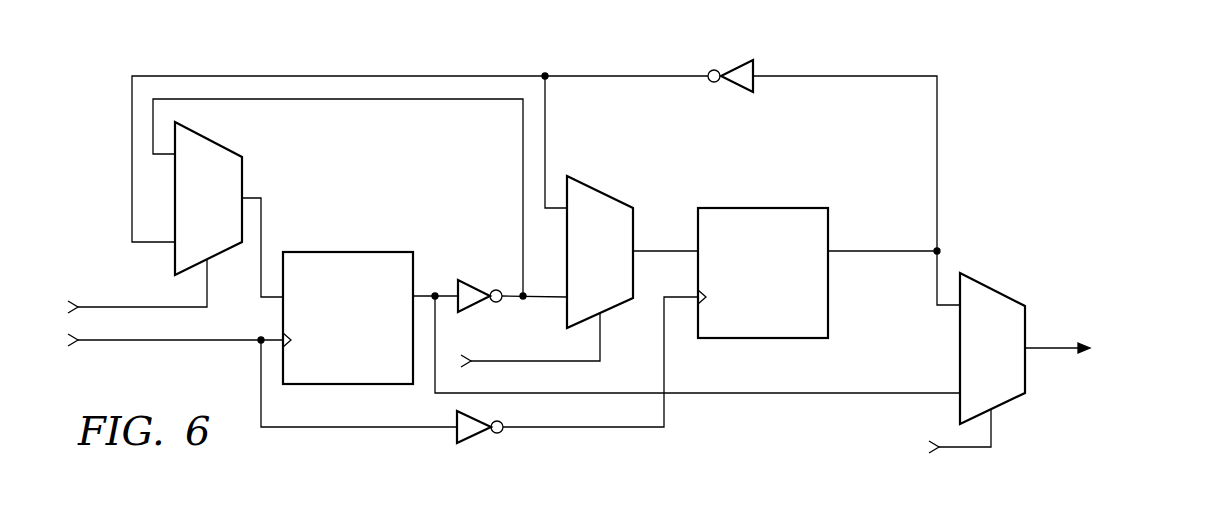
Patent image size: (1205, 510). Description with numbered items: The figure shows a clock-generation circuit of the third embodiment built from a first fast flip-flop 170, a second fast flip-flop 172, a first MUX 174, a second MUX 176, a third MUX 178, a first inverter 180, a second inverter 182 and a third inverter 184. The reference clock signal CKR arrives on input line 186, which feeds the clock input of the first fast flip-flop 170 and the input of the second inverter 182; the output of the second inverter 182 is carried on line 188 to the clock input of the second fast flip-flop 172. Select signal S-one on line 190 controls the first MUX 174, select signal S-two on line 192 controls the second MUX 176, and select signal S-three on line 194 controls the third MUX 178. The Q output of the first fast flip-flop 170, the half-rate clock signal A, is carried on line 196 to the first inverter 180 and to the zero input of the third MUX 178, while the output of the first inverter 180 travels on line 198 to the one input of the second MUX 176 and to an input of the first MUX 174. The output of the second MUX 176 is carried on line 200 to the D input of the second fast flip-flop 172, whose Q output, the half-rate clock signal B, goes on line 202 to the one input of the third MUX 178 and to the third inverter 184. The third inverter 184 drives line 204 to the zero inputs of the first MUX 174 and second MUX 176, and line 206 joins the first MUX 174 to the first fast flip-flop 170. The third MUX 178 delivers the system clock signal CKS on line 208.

The first fast flip-flop 170 is at (355, 252).
The second fast flip-flop 172 is at (766, 208).
The first MUX 174 is at (242, 175).
The second MUX 176 is at (600, 190).
The third MUX 178 is at (992, 286).
The first inverter 180 is at (472, 290).
The second inverter 182 is at (476, 436).
The third inverter 184 is at (753, 63).
The input line 186 is at (151, 343).
The line 188 is at (620, 428).
The line 190 is at (150, 305).
The line 192 is at (550, 358).
The line 194 is at (991, 425).
The line 196 is at (435, 292).
The line 198 is at (523, 165).
The line 200 is at (657, 248).
The line 202 is at (937, 140).
The line 204 is at (611, 76).
The multiplexer output line 206 is at (261, 222).
The line 208 is at (1048, 352).